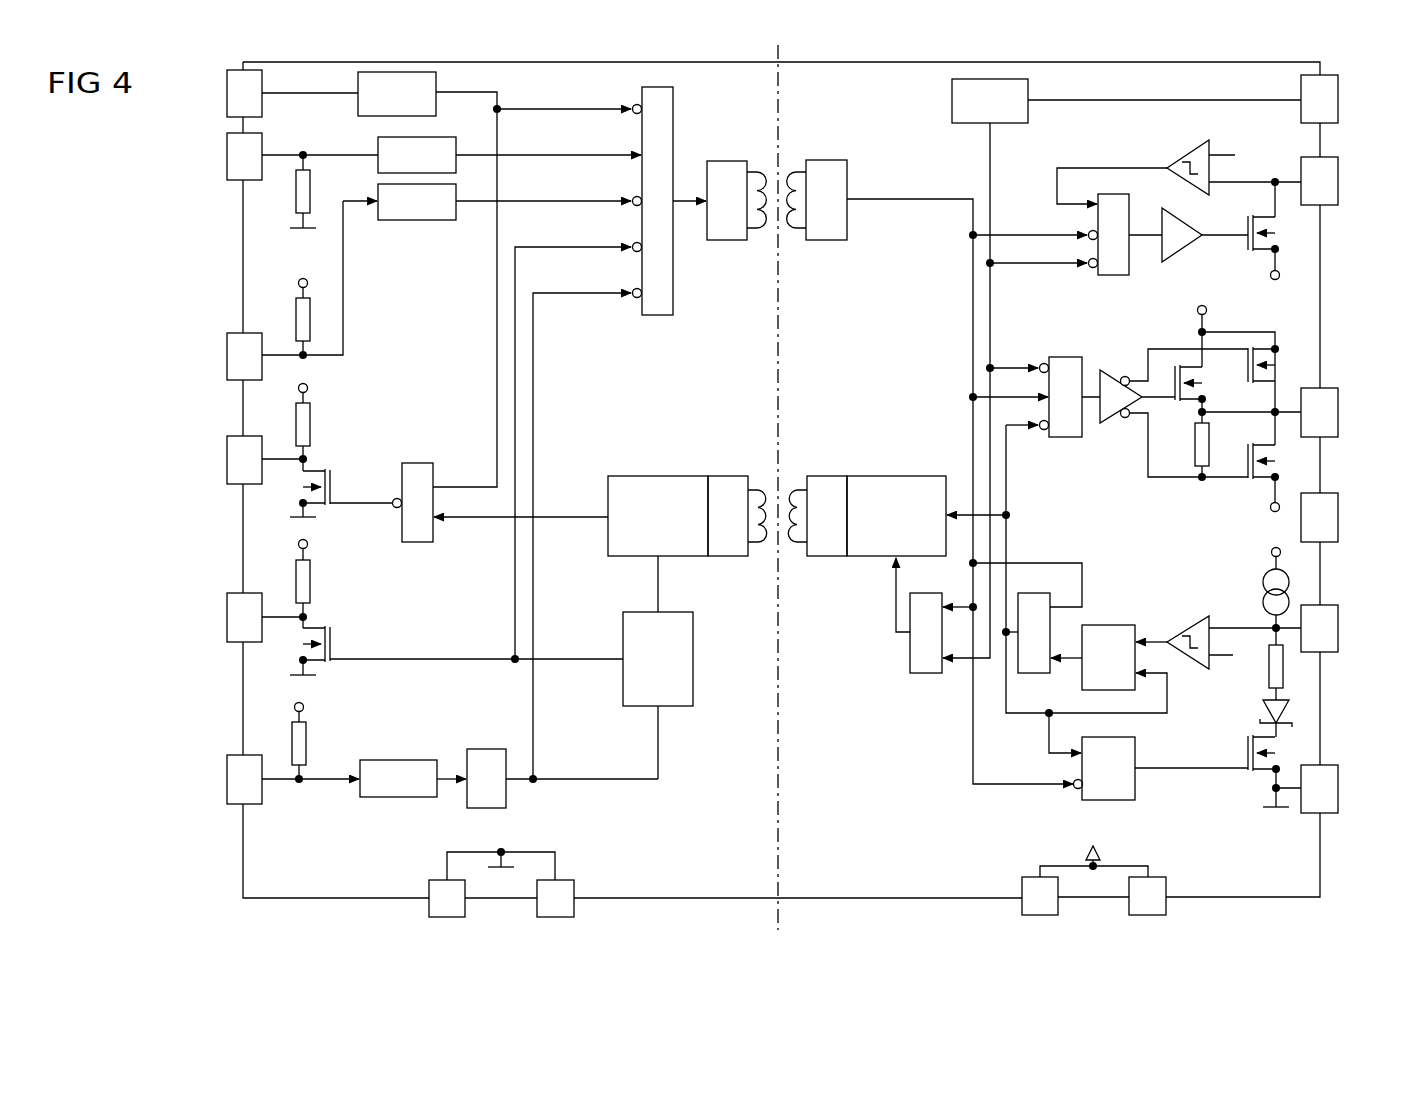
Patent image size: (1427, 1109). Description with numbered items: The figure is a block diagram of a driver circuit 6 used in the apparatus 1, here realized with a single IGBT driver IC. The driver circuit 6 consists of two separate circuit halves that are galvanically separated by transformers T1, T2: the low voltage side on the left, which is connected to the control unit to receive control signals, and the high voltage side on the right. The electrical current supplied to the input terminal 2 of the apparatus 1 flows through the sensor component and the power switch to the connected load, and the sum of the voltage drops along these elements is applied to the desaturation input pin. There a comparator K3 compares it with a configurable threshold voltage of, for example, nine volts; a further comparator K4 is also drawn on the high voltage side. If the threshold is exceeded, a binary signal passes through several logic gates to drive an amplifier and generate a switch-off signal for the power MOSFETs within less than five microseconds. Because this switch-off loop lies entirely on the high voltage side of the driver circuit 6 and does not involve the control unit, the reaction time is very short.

The driver circuit 6 is at (152, 883).
The transformer T1 is at (810, 132).
The transformer T2 is at (797, 470).
The comparator K3 is at (1233, 634).
The comparator K4 is at (1232, 157).
The apparatus 1 is at (381, 548).
The input terminal 2 is at (1267, 810).